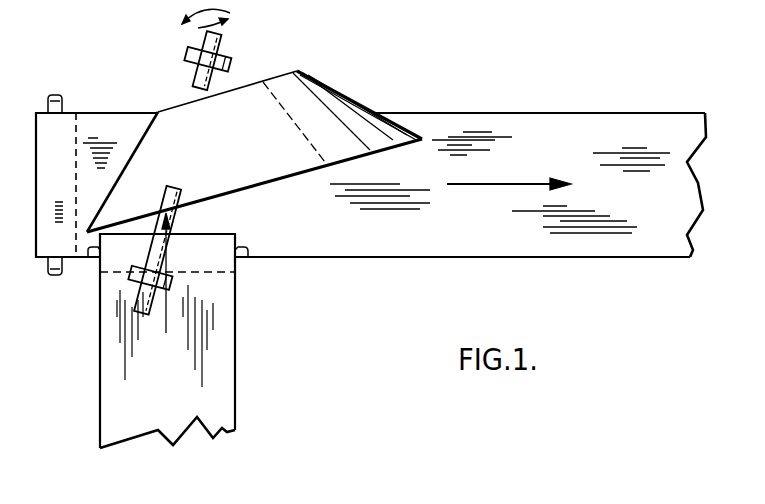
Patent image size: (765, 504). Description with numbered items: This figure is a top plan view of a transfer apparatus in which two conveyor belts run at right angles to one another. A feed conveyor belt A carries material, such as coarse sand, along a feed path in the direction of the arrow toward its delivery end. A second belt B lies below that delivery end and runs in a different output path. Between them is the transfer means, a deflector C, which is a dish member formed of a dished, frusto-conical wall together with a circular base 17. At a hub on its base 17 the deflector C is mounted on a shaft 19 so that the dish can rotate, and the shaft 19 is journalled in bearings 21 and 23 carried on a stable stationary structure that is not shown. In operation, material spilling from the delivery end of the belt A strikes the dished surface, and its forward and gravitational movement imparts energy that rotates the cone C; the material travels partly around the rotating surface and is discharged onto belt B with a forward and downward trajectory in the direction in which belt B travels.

The circular base 17 is at (274, 73).
The shaft 19 is at (273, 237).
The bearing 21 is at (242, 50).
The bearing 23 is at (297, 276).
The feed conveyor belt A is at (238, 398).
The belt B is at (479, 112).
The deflector C is at (348, 100).